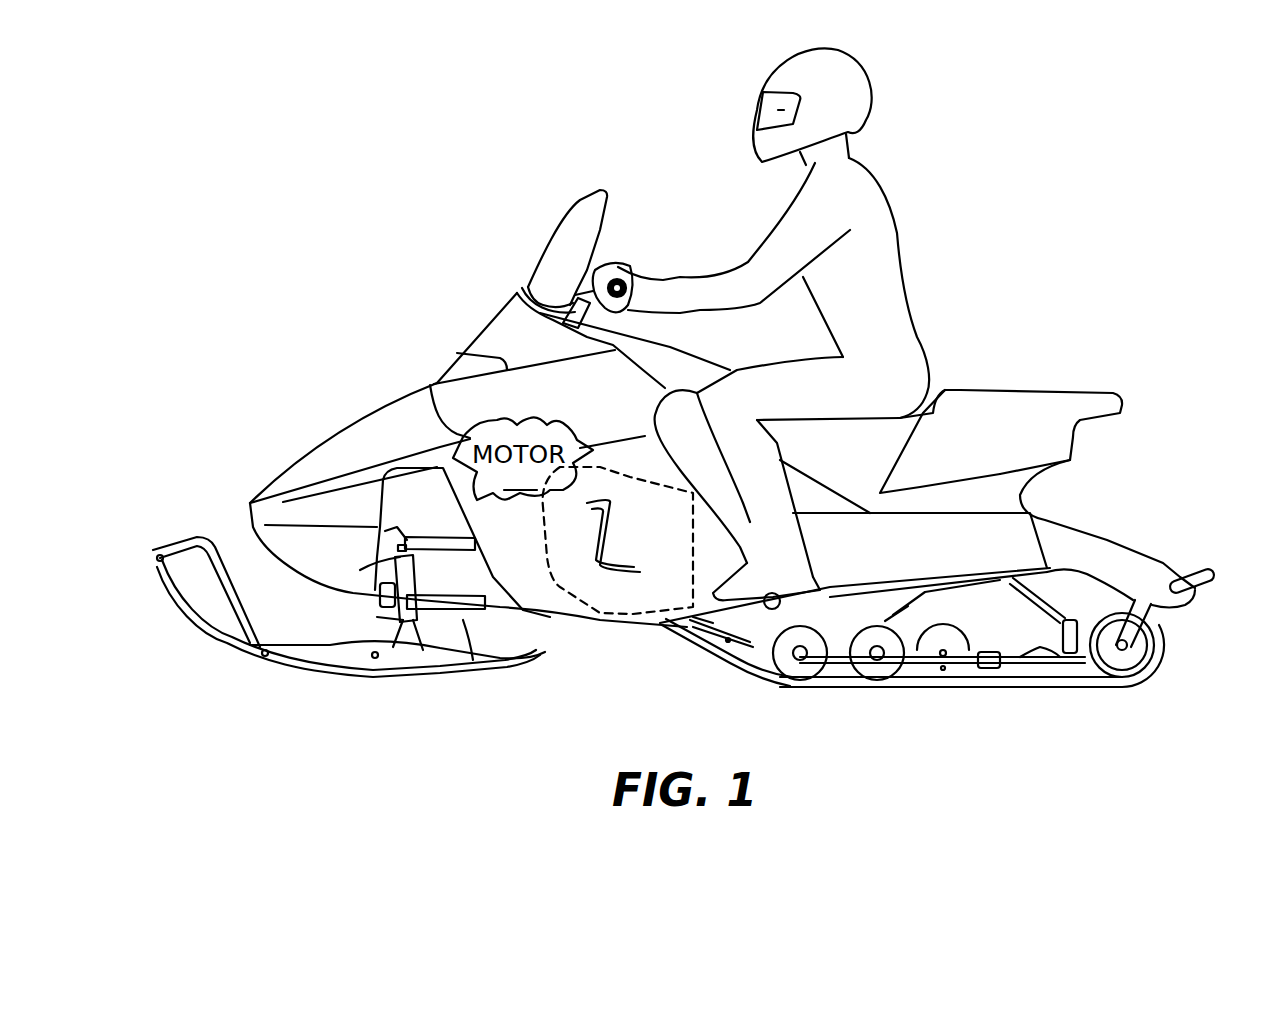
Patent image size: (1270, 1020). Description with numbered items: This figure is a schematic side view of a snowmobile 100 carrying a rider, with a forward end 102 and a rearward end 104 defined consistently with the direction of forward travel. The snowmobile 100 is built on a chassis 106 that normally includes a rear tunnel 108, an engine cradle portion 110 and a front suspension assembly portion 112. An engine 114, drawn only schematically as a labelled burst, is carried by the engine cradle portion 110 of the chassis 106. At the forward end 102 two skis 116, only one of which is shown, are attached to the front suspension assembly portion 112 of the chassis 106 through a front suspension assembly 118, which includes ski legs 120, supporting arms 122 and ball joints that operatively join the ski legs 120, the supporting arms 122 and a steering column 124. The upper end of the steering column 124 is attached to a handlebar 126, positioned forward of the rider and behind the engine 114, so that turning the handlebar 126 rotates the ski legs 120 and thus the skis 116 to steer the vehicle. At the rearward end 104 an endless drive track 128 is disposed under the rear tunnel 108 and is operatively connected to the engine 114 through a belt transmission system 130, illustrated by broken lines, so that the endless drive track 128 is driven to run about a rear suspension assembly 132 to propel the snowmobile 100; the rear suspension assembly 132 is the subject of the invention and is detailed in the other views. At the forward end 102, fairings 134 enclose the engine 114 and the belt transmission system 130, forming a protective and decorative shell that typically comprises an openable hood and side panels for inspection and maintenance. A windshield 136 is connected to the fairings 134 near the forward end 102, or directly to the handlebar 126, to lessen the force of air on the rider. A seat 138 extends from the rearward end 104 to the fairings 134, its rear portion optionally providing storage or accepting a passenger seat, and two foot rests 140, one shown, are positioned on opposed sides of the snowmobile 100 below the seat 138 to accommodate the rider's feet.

The snowmobile 100 is at (440, 302).
The forward end 102 is at (250, 498).
The rearward end 104 is at (1120, 407).
The chassis 106 is at (627, 614).
The rear tunnel 108 is at (1027, 533).
The engine cradle portion 110 is at (580, 603).
The front suspension assembly portion 112 is at (380, 517).
The engine 114 is at (431, 382).
The ski 116 is at (212, 645).
The front suspension assembly 118 is at (378, 590).
The ski leg 120 is at (427, 648).
The supporting arm 122 is at (470, 612).
The steering column 124 is at (522, 288).
The handlebar 126 is at (622, 268).
The endless drive track 128 is at (733, 664).
The belt transmission system 130 is at (532, 598).
The rear suspension assembly 132 is at (1020, 632).
The fairings 134 is at (374, 418).
The windshield 136 is at (583, 215).
The seat 138 is at (935, 410).
The foot rest 140 is at (773, 610).